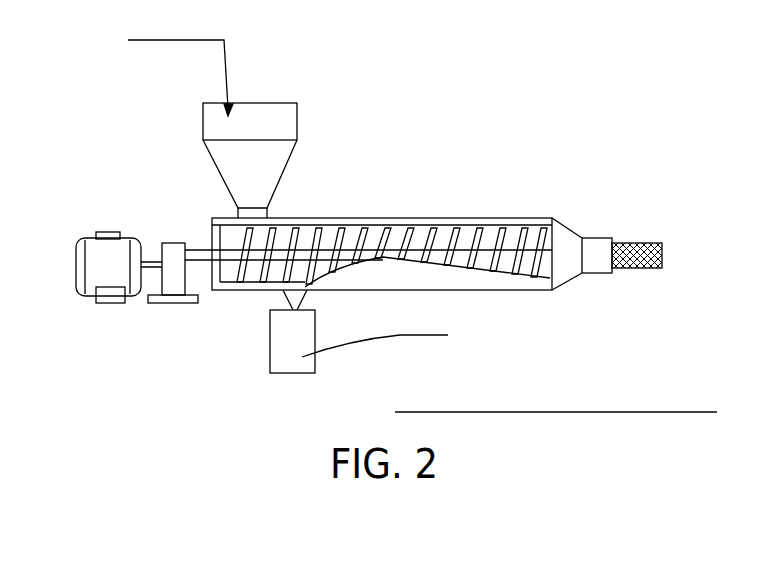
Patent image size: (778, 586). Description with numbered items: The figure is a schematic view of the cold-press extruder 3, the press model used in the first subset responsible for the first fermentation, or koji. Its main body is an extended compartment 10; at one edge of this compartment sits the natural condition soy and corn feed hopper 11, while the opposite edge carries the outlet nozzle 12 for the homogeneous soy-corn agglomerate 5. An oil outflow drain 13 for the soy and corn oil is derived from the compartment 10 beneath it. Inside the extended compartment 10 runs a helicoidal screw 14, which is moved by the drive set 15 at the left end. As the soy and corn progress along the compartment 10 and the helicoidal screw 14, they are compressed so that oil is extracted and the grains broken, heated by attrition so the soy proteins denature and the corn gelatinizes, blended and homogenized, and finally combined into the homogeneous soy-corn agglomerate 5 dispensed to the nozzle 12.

The cold-press extruder 3 is at (628, 88).
The homogeneous soy-corn agglomerate 5 is at (717, 412).
The extended compartment 10 is at (378, 218).
The natural condition soy and corn feed hopper 11 is at (248, 125).
The outlet nozzle 12 is at (568, 253).
The oil outflow drain 13 is at (290, 338).
The helicoidal screw 14 is at (473, 218).
The drive set 15 is at (118, 232).